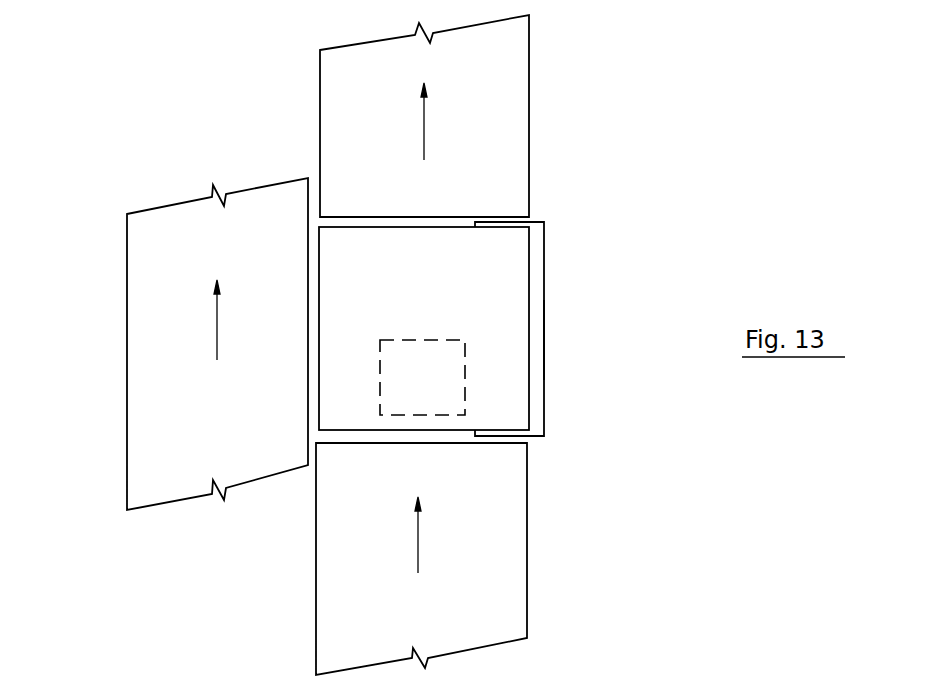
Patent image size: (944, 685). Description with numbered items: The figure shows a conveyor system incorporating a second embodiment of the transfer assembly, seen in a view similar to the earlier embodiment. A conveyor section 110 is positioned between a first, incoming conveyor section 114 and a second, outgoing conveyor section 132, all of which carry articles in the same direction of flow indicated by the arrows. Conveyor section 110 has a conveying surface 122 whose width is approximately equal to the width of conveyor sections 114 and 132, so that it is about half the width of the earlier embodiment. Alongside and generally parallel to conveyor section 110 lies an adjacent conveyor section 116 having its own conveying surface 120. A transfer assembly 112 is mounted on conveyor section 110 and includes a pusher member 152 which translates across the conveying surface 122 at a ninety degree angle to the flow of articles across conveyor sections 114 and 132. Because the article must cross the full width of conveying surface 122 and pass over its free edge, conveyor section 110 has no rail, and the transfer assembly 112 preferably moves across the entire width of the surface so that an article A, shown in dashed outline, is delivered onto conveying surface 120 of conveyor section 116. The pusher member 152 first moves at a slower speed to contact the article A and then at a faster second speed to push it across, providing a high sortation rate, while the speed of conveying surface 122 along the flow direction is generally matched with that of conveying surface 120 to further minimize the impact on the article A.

The conveyor section 110 is at (604, 242).
The transfer assembly 112 is at (562, 306).
The incoming conveyor section 114 is at (502, 560).
The adjacent parallel conveyor section 116 is at (159, 344).
The conveying surface 120 is at (243, 430).
The conveying surface 122 is at (448, 278).
The outgoing conveyor section 132 is at (535, 119).
The pusher member 152 is at (528, 377).
The article A is at (430, 372).